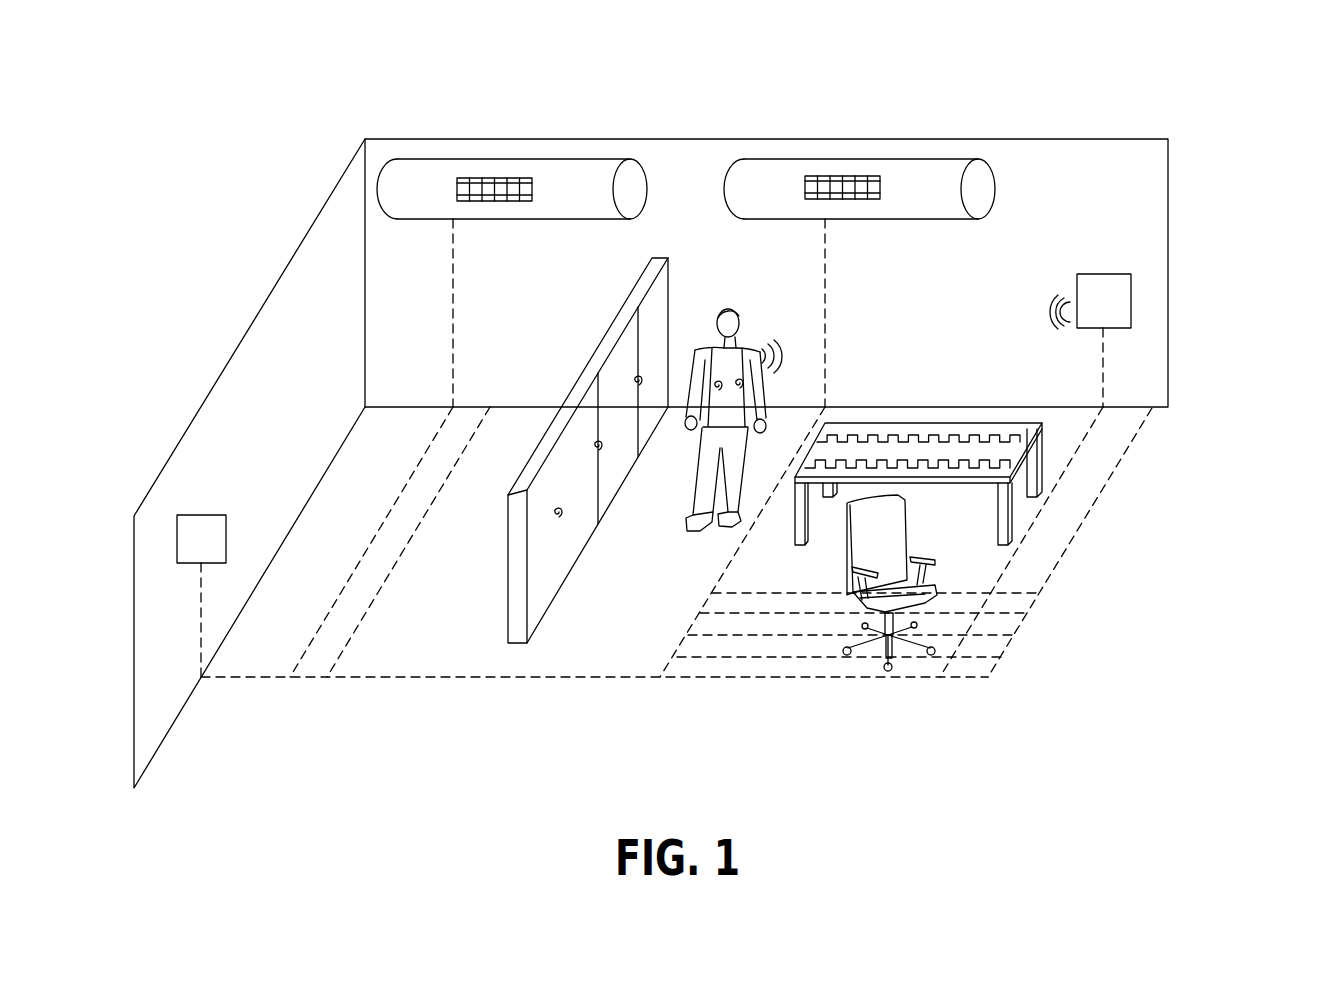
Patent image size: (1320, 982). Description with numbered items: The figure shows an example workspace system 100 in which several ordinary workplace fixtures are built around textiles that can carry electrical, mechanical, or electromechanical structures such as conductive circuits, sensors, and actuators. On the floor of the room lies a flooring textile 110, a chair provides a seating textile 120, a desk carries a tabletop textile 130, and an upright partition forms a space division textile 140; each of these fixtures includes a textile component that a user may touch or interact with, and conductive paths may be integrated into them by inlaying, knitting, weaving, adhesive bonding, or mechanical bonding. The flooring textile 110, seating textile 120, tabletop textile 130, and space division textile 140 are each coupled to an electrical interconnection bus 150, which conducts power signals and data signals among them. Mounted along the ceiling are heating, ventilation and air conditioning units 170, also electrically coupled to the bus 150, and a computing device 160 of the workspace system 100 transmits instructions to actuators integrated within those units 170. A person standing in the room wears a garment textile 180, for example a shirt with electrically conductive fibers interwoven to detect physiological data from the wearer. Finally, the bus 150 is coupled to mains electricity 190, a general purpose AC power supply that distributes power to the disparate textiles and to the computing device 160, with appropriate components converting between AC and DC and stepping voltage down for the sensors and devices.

The workspace system 100 is at (1242, 98).
The flooring textile 110 is at (400, 633).
The seating textile 120 is at (897, 522).
The tabletop textile 130 is at (983, 423).
The space division textile 140 is at (663, 289).
The electrical interconnection bus 150 is at (553, 678).
The computing device 160 is at (1105, 273).
The HVAC unit 170 is at (573, 222).
The garment textile 180 is at (748, 352).
The mains electricity 190 is at (198, 515).